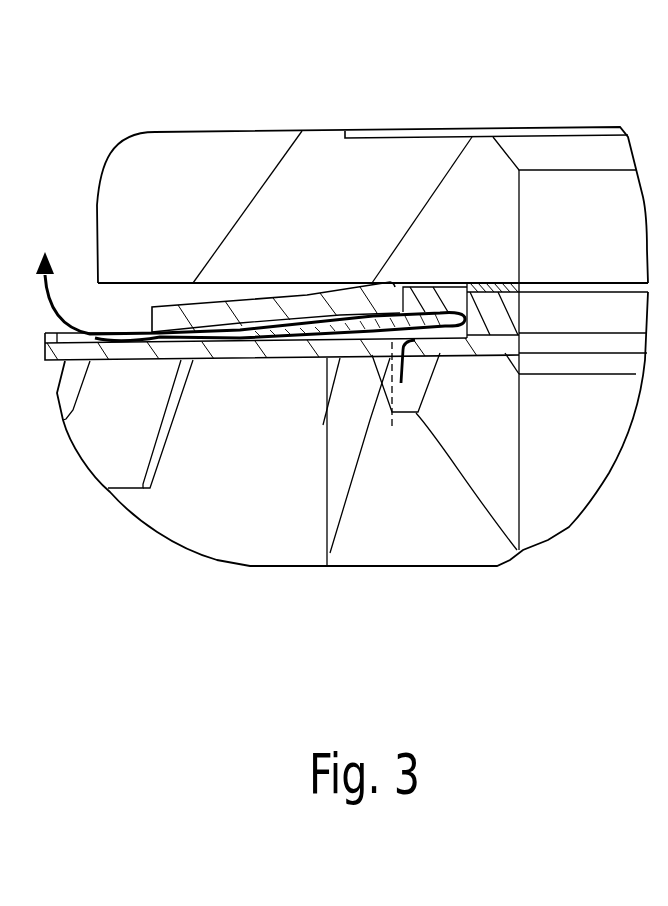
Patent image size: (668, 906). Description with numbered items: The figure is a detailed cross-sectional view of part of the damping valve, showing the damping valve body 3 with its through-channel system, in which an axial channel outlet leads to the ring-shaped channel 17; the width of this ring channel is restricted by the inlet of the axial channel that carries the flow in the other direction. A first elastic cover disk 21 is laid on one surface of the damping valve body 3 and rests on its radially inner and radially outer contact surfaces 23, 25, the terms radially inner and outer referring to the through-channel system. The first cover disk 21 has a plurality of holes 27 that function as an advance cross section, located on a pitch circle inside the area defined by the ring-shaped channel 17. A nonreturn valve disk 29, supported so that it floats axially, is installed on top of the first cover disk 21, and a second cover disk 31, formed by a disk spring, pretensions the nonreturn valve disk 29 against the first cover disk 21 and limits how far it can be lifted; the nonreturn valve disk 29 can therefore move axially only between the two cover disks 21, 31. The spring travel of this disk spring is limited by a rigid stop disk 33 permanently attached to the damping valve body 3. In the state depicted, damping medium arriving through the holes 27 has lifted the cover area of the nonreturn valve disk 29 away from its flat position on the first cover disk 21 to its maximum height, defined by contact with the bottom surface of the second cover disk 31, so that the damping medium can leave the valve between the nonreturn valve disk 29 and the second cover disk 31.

The damping valve body 3 is at (381, 547).
The ring-shaped channel 17 is at (422, 397).
The first elastic cover disk 21 is at (128, 353).
The radially inner contact surface 23 is at (480, 353).
The radially outer contact surface 25 is at (323, 425).
The holes 27 is at (330, 553).
The nonreturn valve disk 29 is at (403, 312).
The second cover disk 31 is at (336, 304).
The rigid stop disk 33 is at (319, 175).